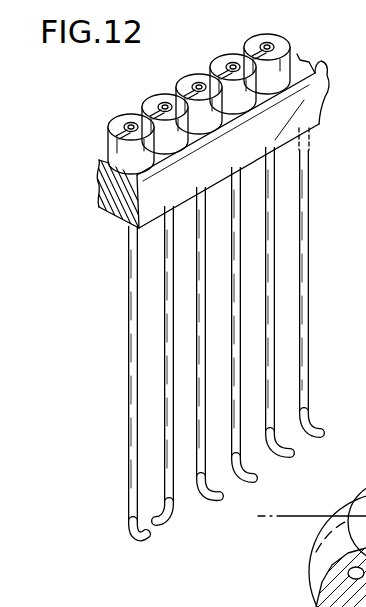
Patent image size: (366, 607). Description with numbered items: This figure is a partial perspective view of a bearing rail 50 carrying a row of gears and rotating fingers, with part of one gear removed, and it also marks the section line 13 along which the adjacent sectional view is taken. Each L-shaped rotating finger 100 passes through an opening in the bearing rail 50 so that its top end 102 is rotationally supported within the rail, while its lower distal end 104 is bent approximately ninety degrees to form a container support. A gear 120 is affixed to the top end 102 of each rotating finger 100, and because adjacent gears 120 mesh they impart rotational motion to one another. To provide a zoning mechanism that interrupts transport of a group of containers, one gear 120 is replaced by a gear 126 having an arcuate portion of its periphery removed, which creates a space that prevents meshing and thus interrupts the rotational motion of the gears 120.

The bearing rail 50 is at (320, 104).
The L-shaped rotating finger 100 is at (128, 300).
The top end 102 is at (186, 74).
The lower distal end 104 is at (131, 539).
The gear 120 is at (109, 128).
The gear with interrupted periphery 126 is at (146, 98).
The section line 13- 13 is at (342, 0).